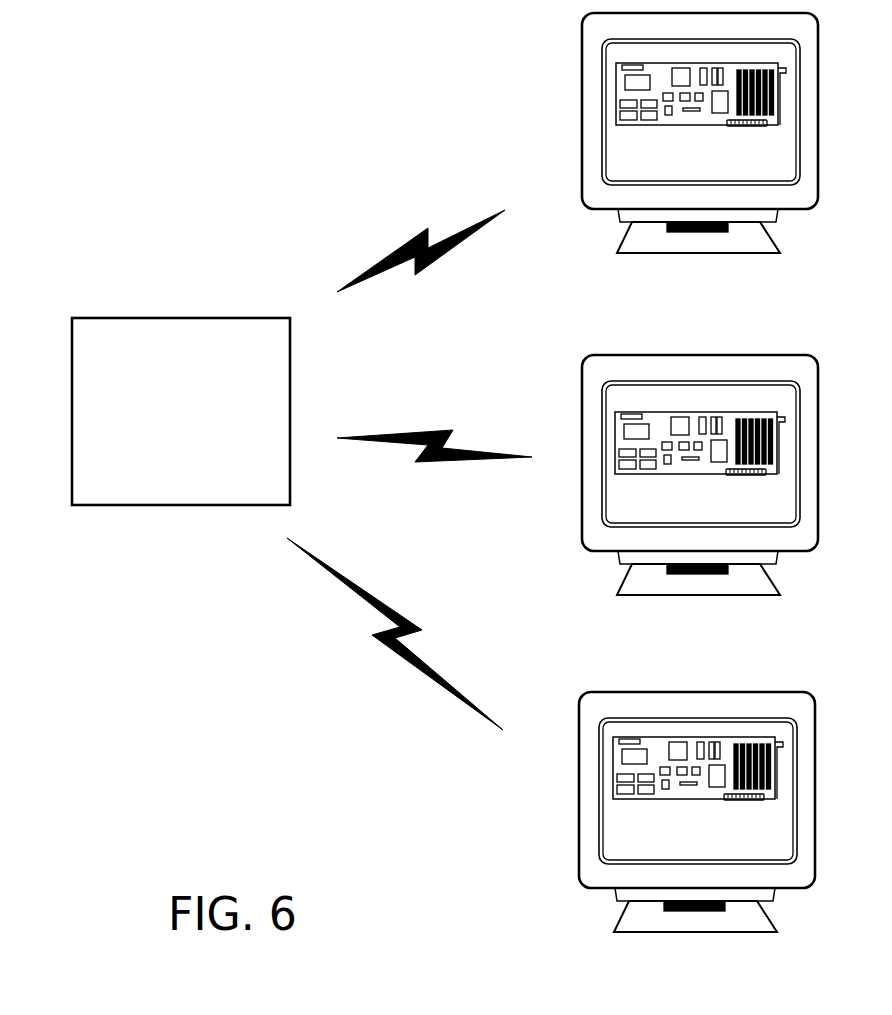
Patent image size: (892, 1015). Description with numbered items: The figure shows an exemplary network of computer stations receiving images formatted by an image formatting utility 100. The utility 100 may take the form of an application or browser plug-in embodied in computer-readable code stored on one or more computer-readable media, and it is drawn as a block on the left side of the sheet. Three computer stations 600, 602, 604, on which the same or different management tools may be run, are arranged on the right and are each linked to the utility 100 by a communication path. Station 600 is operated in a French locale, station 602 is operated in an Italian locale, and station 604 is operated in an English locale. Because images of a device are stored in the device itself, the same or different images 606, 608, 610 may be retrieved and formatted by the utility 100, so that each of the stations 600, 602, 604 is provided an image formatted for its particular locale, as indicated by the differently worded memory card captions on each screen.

The image formatting utility 100 is at (72, 372).
The computer station 600 is at (580, 80).
The computer station 602 is at (581, 420).
The computer station 604 is at (579, 748).
The image 606 is at (616, 113).
The image 608 is at (615, 458).
The image 610 is at (613, 788).